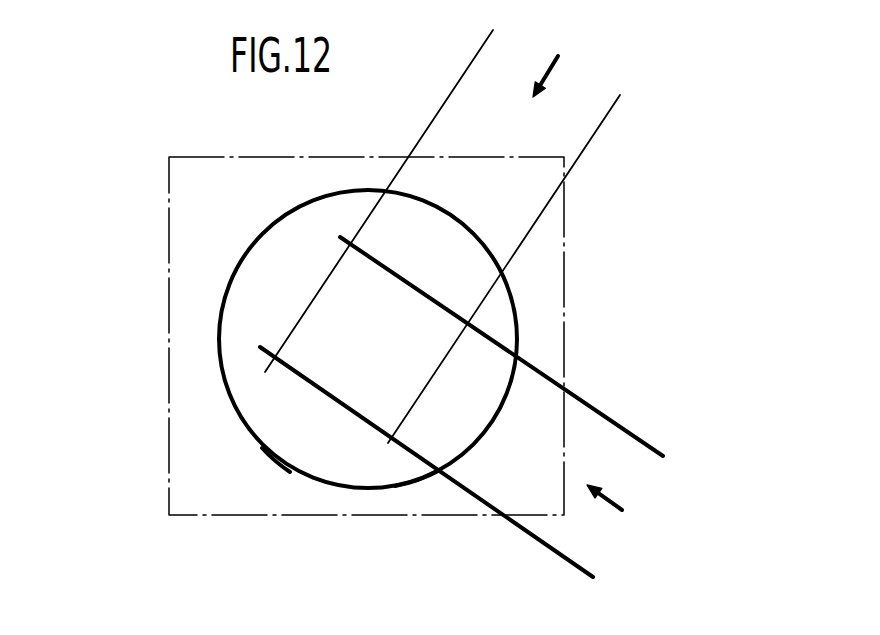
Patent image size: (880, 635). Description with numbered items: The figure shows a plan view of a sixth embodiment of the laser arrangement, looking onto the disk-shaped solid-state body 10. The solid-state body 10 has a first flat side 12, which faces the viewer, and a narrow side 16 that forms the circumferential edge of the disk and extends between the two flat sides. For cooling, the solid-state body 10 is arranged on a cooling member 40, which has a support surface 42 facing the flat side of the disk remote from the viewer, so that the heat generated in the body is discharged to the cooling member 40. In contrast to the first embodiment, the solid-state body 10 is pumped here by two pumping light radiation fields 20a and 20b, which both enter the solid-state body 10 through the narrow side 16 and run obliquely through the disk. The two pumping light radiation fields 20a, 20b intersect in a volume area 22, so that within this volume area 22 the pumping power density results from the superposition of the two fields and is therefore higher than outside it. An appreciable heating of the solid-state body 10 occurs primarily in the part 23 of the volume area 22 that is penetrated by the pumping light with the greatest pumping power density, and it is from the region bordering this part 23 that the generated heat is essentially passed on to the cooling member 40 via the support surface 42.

The solid-state body 10 is at (235, 380).
The first flat side 12 is at (303, 293).
The narrow side 16 is at (273, 456).
The part of the volume area 23 is at (340, 322).
The pumping light radiation field 20a is at (563, 538).
The pumping light radiation field 20b is at (458, 98).
The volume area 22 is at (372, 397).
The support surface 42 is at (407, 500).
The cooling member 40 is at (453, 503).